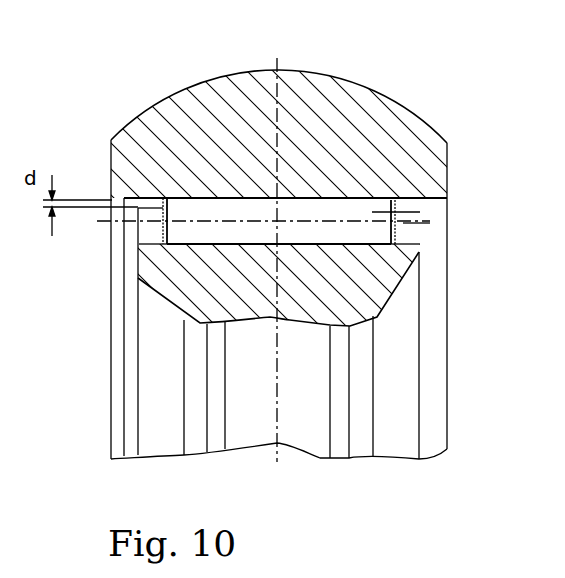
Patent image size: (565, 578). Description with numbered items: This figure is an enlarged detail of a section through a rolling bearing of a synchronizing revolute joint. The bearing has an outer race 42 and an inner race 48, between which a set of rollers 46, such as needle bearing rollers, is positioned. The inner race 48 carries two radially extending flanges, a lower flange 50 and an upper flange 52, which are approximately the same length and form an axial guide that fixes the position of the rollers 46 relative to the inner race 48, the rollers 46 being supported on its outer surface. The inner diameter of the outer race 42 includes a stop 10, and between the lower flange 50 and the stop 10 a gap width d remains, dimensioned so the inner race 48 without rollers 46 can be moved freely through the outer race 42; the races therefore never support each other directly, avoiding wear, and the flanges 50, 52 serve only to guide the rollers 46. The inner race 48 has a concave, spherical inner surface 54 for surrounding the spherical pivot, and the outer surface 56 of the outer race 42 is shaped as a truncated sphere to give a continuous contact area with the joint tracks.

The stop 10 is at (117, 197).
The outer race 42 is at (230, 120).
The rollers 46 is at (418, 212).
The inner race 48 is at (165, 276).
The lower flange 50 is at (152, 235).
The upper flange 52 is at (407, 232).
The concave rolling bearing inner surface 54 is at (204, 321).
The outer surface 56 is at (351, 82).